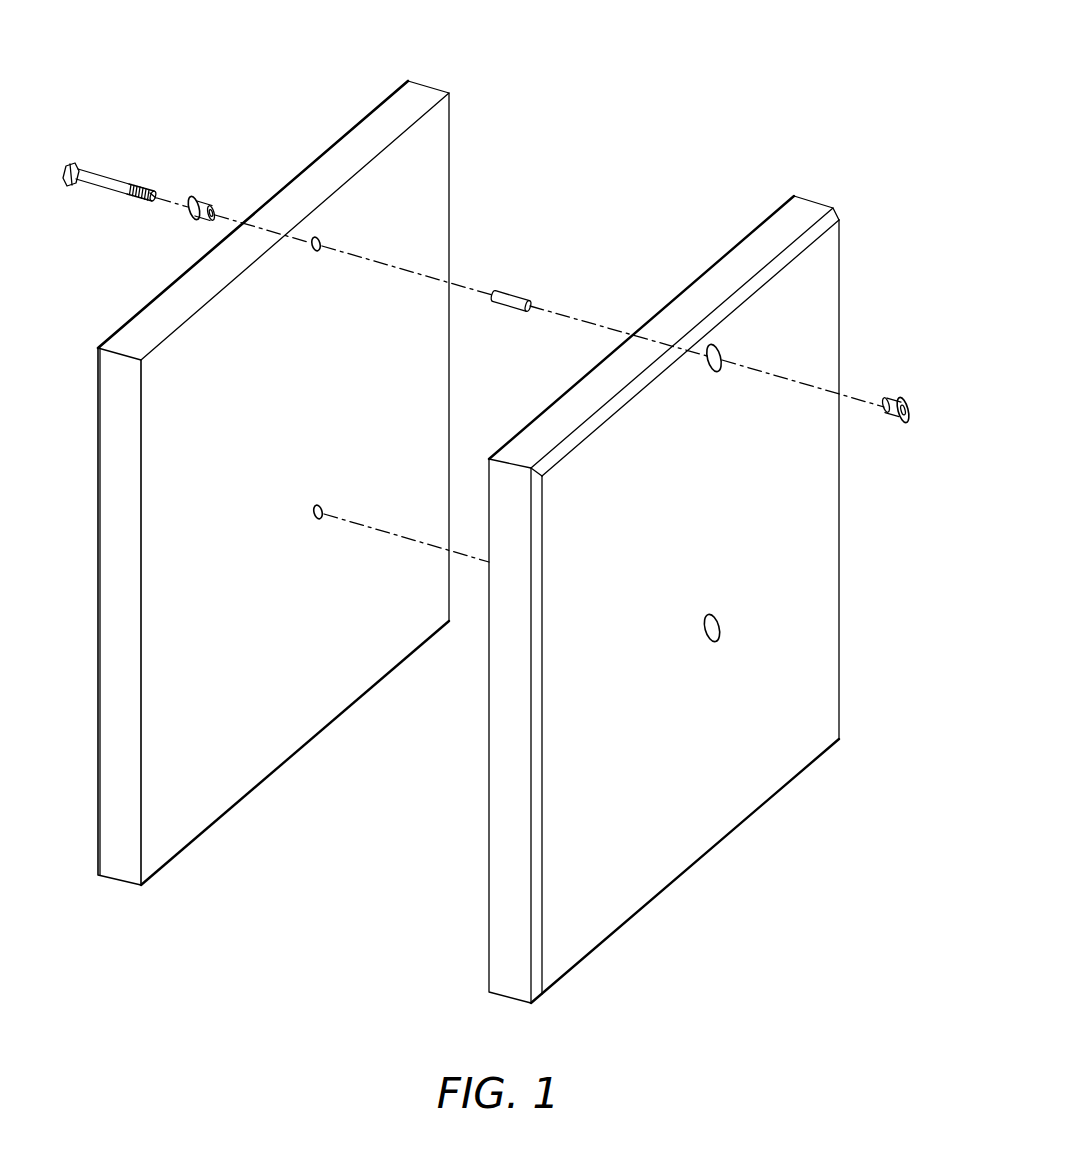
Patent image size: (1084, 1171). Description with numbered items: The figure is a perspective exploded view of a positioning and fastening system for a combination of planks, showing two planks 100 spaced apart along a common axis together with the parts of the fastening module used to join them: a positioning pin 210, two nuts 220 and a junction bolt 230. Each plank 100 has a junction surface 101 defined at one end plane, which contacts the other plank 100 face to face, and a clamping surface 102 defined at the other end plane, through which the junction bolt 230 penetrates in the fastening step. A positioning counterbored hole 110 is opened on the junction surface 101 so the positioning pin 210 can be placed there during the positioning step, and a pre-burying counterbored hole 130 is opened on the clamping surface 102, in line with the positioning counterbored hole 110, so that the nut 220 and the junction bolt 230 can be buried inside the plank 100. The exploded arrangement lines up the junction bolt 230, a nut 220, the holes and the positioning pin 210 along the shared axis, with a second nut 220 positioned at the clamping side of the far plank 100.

The plank 100 is at (524, 505).
The junction surface 101 is at (308, 527).
The clamping surface 102 is at (719, 577).
The positioning counterbored hole 110 is at (325, 228).
The pre-burying counterbored hole 130 is at (720, 348).
The positioning pin 210 is at (518, 294).
The nut 220 is at (196, 198).
The junction bolt 230 is at (110, 178).